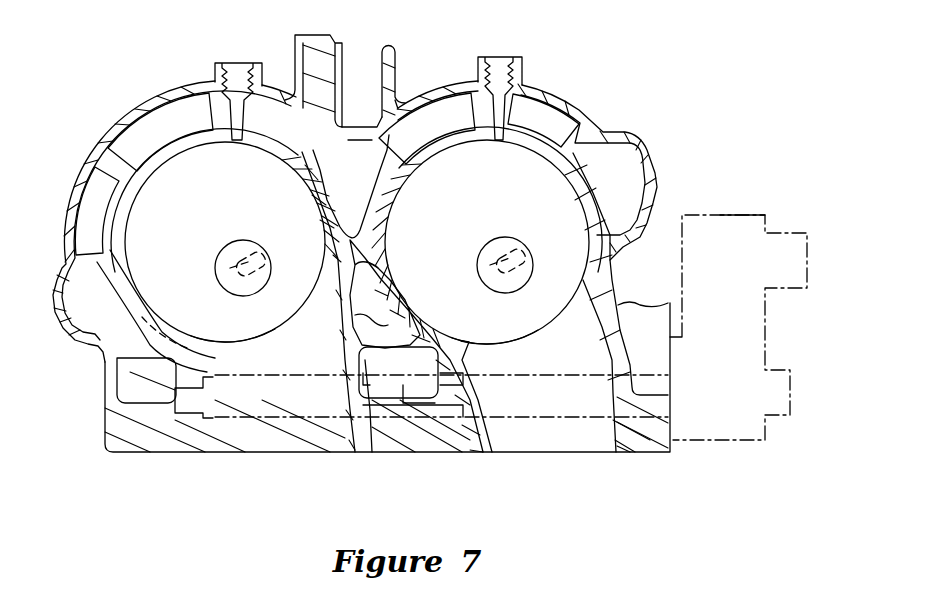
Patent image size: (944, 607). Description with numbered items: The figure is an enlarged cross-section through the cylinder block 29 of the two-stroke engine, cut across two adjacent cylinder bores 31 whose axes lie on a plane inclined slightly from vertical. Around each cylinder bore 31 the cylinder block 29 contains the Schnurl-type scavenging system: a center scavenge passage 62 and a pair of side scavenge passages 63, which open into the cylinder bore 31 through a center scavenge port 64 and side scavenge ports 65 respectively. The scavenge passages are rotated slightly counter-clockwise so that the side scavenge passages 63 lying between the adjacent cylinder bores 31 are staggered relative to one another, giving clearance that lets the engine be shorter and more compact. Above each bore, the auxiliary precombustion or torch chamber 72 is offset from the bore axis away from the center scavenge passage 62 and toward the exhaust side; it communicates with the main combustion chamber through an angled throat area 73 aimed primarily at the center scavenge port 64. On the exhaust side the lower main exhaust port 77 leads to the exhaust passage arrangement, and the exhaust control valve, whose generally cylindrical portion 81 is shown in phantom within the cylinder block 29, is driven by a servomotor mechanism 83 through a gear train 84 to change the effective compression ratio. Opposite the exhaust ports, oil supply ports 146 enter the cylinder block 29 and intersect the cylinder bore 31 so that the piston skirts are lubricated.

The cylinder block 29 is at (118, 425).
The cylinder bore 31 is at (567, 187).
The center scavenge passage 62 is at (445, 100).
The side scavenge passage 63 is at (90, 343).
The center scavenge port 64 is at (545, 150).
The side scavenge port 65 is at (545, 178).
The precombustion chamber 72 is at (528, 287).
The throat area 73 is at (482, 263).
The main exhaust port 77 is at (533, 327).
The cylindrical portion of exhaust control valve 81 is at (542, 415).
The servomotor mechanism 83 is at (775, 356).
The gear train 84 is at (745, 214).
The supply port 146 is at (522, 78).